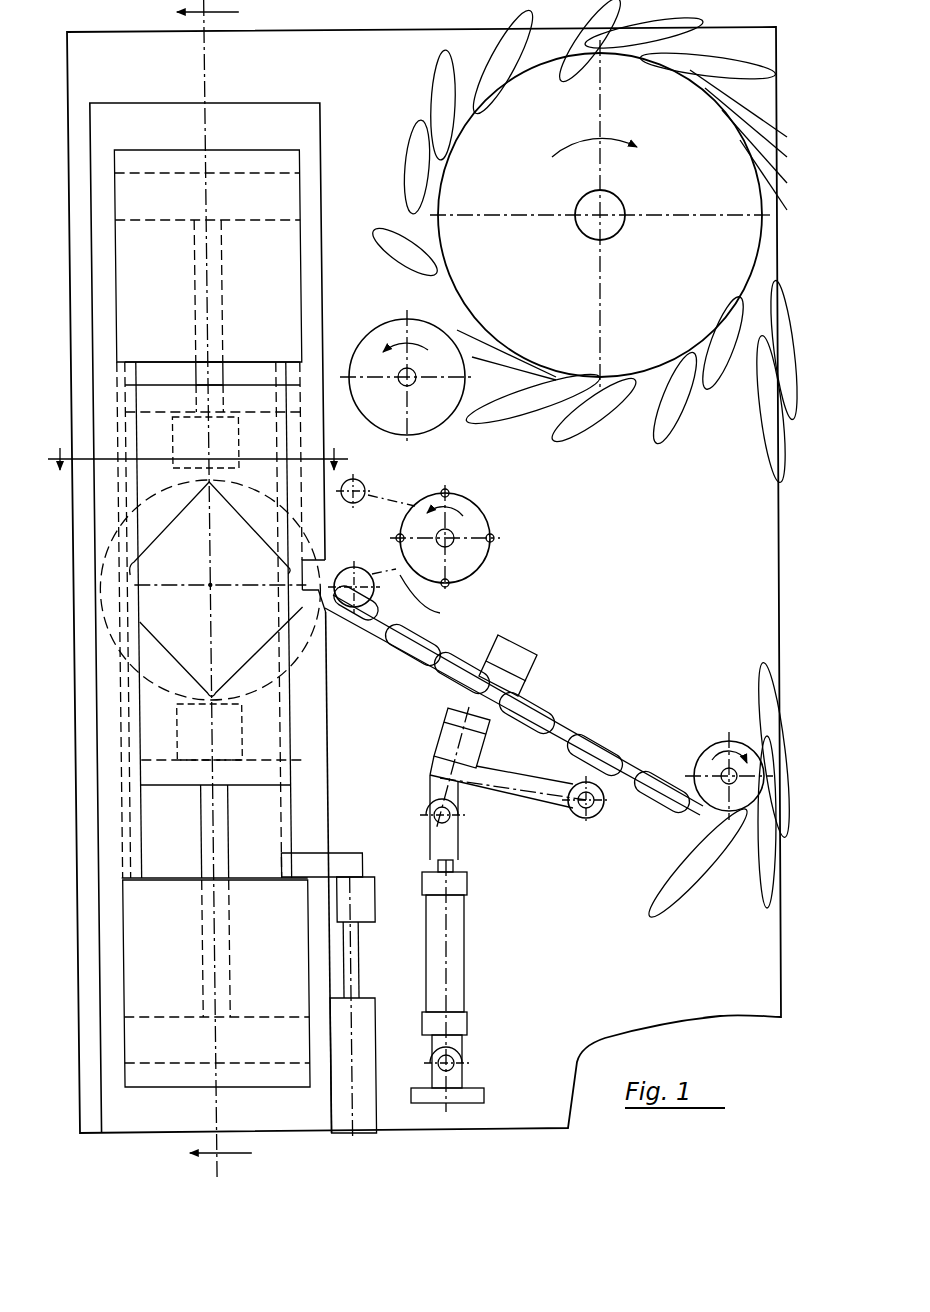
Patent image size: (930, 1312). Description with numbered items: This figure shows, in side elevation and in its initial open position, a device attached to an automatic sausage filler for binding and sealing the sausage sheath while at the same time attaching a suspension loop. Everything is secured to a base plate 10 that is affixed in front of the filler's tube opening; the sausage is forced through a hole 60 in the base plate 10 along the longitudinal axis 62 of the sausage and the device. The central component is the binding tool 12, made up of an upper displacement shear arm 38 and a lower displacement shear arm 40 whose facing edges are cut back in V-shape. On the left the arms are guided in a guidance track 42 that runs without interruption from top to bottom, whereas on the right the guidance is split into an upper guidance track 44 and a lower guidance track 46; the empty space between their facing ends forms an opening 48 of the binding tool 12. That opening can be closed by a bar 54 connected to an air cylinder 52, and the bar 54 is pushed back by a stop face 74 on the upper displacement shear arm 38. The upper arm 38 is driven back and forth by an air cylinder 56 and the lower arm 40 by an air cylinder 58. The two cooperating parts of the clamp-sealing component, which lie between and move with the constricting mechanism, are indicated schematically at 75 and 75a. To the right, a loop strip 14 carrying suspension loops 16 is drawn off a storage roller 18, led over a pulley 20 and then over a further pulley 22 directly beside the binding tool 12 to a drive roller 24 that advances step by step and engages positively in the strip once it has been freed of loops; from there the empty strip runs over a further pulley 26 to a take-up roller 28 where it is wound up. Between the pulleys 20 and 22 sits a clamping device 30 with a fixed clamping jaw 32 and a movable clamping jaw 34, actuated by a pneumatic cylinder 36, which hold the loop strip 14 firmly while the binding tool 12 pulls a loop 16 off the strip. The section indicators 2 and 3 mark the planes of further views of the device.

The section line 2- 2 is at (204, 590).
The section line 3- 3 is at (198, 473).
The base plate 10 is at (650, 574).
The binding tool 12 is at (326, 741).
The loop strip 14 is at (762, 637).
The suspension loops 16 is at (433, 672).
The storage roller 18 is at (524, 145).
The pulley 20 is at (722, 750).
The further pulley 22 is at (368, 596).
The drive roller 24 is at (478, 514).
The further pulley 26 is at (363, 484).
The take-up roller 28 is at (383, 333).
The clamping device 30 is at (500, 803).
The fixed clamping jaw 32 is at (510, 685).
The movable clamping jaw 34 is at (486, 727).
The pneumatic cylinder 36 is at (462, 937).
The upper displacement shear arm 38 is at (166, 500).
The lower displacement shear arm 40 is at (156, 656).
The left guidance track 42 is at (124, 818).
The upper guidance track 44 is at (306, 518).
The lower guidance track 46 is at (312, 711).
The opening 48 is at (284, 575).
The air cylinder 52 is at (350, 1013).
The bar 54 is at (290, 607).
The air cylinder 56 is at (270, 297).
The air cylinder 58 is at (265, 955).
The hole 60 is at (118, 660).
The longitudinal axis 62 is at (206, 586).
The stop face 74 is at (280, 500).
The tool component for application of sealing clamps 75 is at (205, 442).
The tool component for application of sealing clamps 75a is at (223, 732).